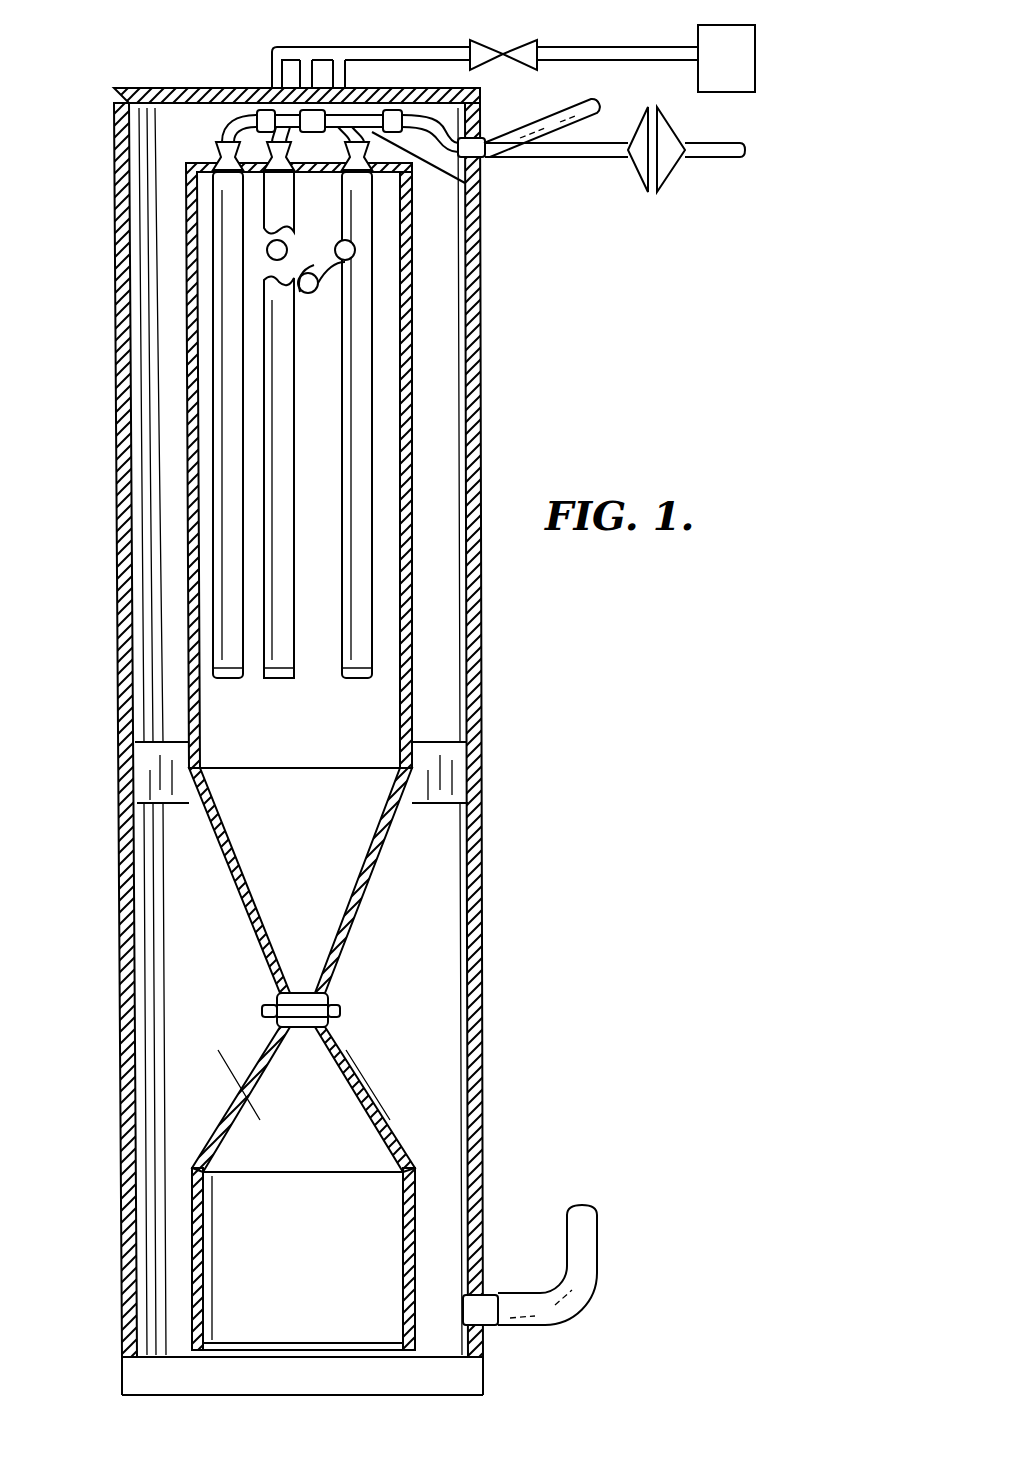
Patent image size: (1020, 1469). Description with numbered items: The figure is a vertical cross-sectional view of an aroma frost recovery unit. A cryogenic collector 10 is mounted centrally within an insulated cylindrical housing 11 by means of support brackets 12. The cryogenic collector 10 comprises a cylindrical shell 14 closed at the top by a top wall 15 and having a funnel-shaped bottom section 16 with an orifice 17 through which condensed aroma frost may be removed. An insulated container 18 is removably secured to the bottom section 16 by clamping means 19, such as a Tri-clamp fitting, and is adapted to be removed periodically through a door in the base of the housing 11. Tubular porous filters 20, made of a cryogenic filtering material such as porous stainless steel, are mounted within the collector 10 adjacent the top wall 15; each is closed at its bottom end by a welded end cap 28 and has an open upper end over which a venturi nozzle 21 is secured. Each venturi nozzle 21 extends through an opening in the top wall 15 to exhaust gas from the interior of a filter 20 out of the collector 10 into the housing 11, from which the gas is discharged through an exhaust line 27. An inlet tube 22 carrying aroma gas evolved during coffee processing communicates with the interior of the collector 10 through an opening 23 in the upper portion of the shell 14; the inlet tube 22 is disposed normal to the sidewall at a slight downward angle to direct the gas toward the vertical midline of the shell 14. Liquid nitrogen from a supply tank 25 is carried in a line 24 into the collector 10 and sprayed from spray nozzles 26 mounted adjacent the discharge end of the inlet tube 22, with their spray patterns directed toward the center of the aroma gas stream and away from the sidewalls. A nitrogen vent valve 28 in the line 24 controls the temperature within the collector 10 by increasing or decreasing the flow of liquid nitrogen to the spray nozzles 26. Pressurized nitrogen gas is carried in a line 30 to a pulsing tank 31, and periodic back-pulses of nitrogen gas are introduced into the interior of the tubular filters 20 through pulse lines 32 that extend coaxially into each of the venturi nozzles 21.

The cryogenic collector 10 is at (186, 546).
The insulated cylindrical housing 11 is at (116, 455).
The support brackets 12 is at (440, 778).
The cylindrical shell 14 is at (412, 375).
The top wall 15 is at (200, 151).
The funnel-shaped bottom section 16 is at (264, 948).
The orifice 17 is at (322, 975).
The insulated container 18 is at (388, 1140).
The clamping means 19 is at (265, 1010).
The tubular porous filters 20 is at (275, 572).
The venturi nozzle 21 is at (203, 143).
The inlet tube 22 is at (578, 100).
The opening 23 is at (338, 245).
The line 24 is at (365, 47).
The supply tank 25 is at (756, 52).
The spray nozzles 26 is at (312, 292).
The exhaust line 27 is at (598, 1248).
The nitrogen vent valve 28 is at (535, 50).
The line 30 is at (715, 157).
The pulsing tank 31 is at (658, 192).
The pulse lines 32 is at (285, 118).